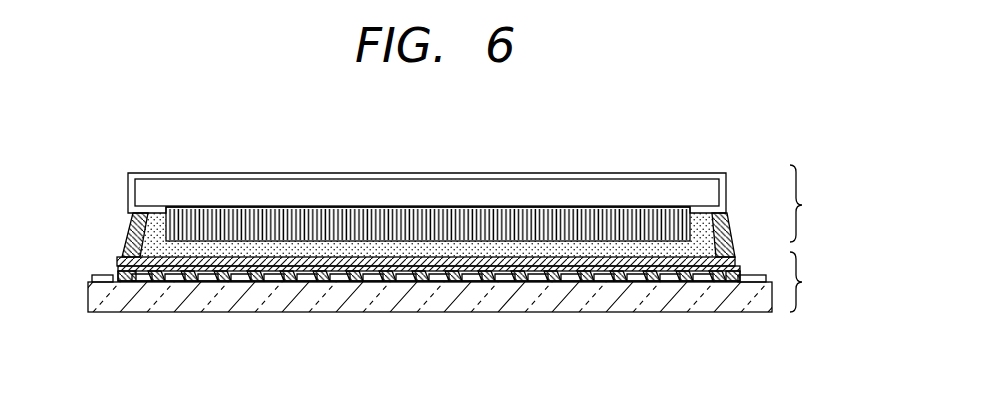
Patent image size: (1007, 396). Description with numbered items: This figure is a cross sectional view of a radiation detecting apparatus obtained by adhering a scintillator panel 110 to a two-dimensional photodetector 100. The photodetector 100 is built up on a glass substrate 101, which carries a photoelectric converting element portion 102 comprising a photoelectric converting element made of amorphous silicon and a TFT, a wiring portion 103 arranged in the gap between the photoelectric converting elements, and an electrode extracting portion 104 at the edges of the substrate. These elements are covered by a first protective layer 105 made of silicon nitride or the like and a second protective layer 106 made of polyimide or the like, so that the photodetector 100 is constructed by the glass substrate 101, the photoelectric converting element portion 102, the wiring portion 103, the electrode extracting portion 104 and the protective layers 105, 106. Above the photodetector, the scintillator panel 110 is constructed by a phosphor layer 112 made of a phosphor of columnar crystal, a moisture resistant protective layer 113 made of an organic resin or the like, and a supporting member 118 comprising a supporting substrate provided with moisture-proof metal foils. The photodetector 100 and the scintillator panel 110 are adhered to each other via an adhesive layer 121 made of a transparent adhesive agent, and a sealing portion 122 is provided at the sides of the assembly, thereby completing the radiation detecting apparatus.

The 2-dimensional photodetector 100 is at (816, 282).
The glass substrate 101 is at (258, 300).
The photoelectric converting element portion 102 is at (300, 275).
The wiring portion 103 is at (338, 276).
The electrode extracting portion 104 is at (97, 279).
The first protective layer 105 is at (462, 277).
The second protective layer 106 is at (552, 278).
The scintillator panel 110 is at (816, 203).
The phosphor layer 112 is at (138, 242).
The moisture resistant protective layer 113 is at (623, 176).
The supporting member 118 is at (248, 192).
The adhesive layer 121 is at (183, 262).
The sealing portion 122 is at (409, 235).